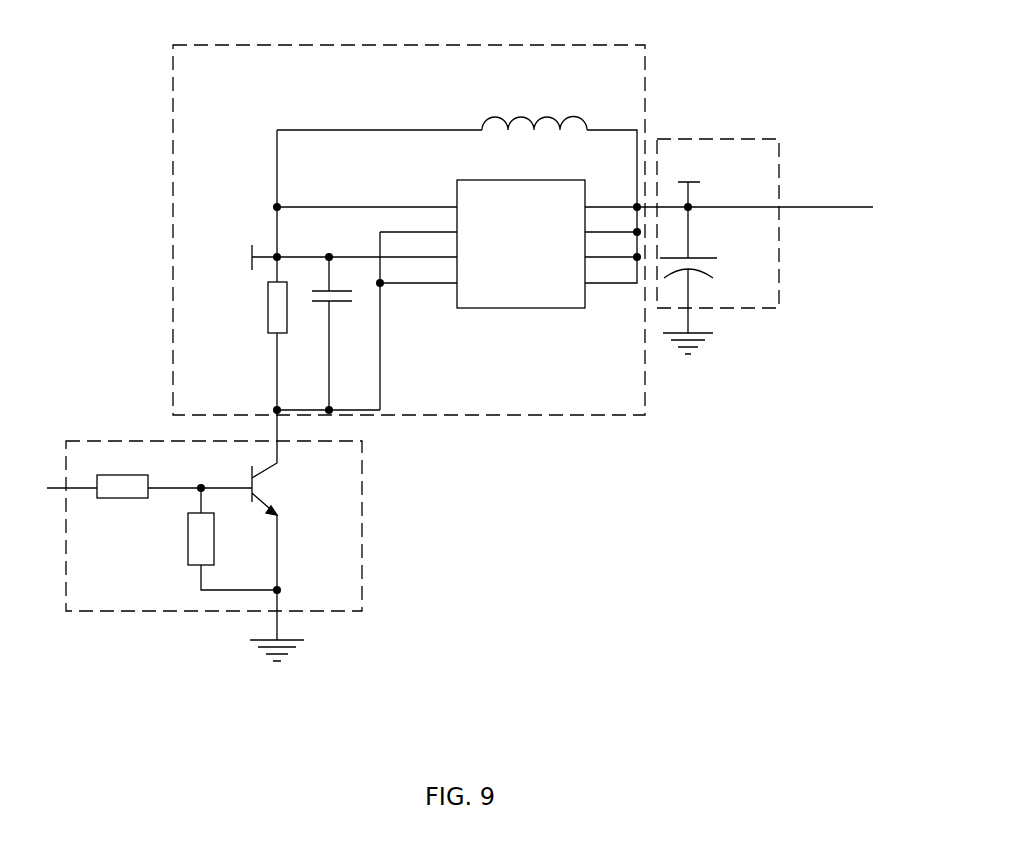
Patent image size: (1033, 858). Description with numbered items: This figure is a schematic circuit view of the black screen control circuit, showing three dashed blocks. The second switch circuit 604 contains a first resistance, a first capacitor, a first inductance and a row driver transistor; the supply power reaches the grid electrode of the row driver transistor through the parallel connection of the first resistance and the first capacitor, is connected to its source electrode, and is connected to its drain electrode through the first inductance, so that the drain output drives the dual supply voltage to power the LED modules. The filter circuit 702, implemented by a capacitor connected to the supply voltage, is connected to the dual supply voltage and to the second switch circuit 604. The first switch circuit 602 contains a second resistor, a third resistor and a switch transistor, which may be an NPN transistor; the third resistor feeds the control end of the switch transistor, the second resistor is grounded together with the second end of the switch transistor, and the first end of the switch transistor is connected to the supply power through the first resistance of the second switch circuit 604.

The second switch circuit 604 is at (645, 122).
The filter circuit 702 is at (759, 307).
The first switch circuit 602 is at (329, 578).